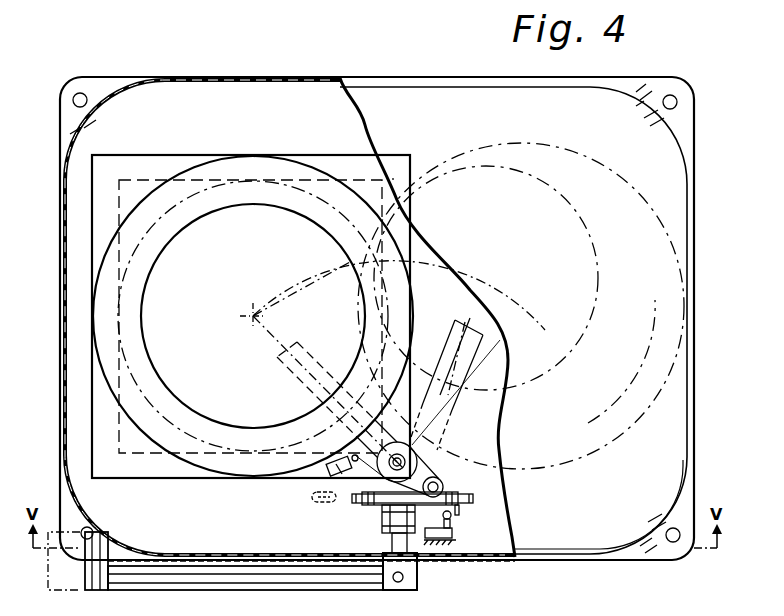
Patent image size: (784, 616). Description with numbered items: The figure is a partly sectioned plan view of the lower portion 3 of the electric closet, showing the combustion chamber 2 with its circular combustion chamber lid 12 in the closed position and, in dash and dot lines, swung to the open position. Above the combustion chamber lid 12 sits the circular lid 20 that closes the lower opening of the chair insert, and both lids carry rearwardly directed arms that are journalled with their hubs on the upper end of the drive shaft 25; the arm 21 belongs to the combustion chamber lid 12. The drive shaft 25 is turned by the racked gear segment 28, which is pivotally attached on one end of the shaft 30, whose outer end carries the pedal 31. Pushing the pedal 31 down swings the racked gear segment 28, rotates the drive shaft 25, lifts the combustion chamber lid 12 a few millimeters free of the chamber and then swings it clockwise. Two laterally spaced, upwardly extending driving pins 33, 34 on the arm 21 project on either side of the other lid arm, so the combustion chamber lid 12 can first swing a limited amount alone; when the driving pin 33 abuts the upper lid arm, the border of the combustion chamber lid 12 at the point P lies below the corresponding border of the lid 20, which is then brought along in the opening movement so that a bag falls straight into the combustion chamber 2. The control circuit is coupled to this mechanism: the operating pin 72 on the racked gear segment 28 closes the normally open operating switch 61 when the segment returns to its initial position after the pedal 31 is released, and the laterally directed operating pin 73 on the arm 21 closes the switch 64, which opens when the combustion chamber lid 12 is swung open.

The combustion chamber 2 is at (170, 160).
The lower portion 3 is at (430, 100).
The combustion chamber lid 12 is at (305, 175).
The lid 20 is at (240, 218).
The arm 21 is at (357, 480).
The drive shaft 25 is at (432, 470).
The racked gear segment 28 is at (475, 497).
The shaft 30 is at (408, 543).
The pedal 31 is at (262, 582).
The driving pin 33 is at (352, 455).
The driving pin 34 is at (362, 372).
The operating switch 61 is at (453, 532).
The switch 64 is at (330, 474).
The operating pin 72 is at (459, 512).
The operating pin 73 is at (330, 463).
The point P is at (393, 178).